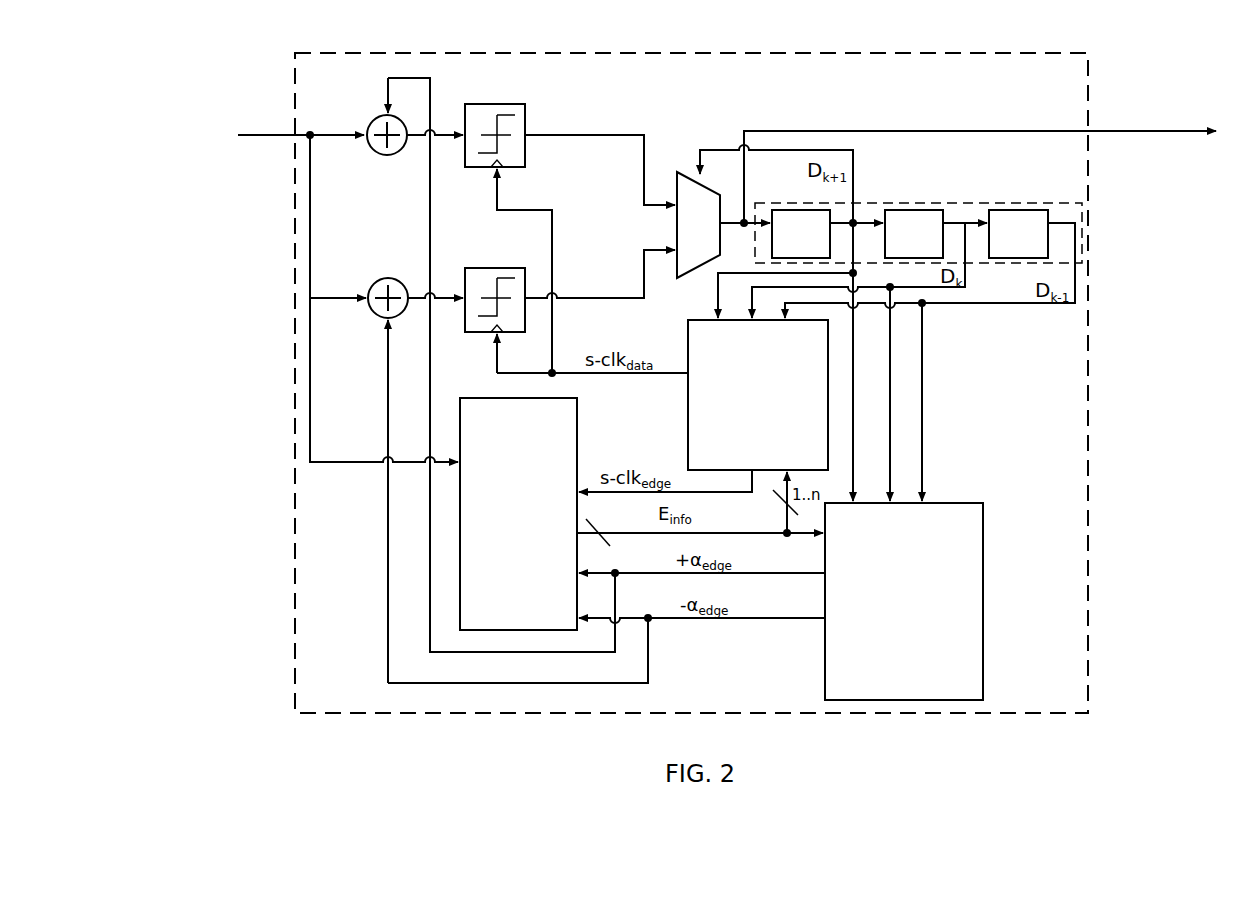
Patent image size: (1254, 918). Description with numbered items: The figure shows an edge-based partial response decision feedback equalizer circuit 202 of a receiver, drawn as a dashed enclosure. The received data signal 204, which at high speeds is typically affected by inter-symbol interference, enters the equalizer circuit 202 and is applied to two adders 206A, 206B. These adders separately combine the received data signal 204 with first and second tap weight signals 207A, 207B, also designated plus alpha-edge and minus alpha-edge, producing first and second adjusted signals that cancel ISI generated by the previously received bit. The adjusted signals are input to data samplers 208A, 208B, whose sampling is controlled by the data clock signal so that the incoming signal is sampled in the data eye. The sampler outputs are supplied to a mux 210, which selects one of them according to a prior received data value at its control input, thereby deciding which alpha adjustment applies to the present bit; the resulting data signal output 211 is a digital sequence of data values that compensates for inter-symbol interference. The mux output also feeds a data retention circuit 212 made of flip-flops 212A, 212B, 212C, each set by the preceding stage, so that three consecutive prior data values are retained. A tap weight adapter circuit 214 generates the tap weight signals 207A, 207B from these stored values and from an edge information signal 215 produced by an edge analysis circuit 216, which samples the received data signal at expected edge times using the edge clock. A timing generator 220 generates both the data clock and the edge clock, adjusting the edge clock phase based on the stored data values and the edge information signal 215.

The equalizer circuit 202 is at (858, 53).
The received data signal 204 is at (272, 137).
The adder 206A is at (371, 120).
The adder 206B is at (390, 278).
The first tap weight signal 207A is at (418, 78).
The second tap weight signal 207B is at (390, 407).
The data sampler 208A is at (516, 104).
The data sampler 208B is at (519, 268).
The mux 210 is at (682, 170).
The data signal output 211 is at (1114, 135).
The data retention circuit 212 is at (918, 215).
The flip-flop 212A is at (801, 234).
The flip-flop 212B is at (914, 234).
The flip-flop 212C is at (1018, 234).
The tap weight adapter circuit 214 is at (904, 601).
The edge information signal 215 is at (755, 540).
The edge analysis circuit 216 is at (518, 514).
The timing generator 220 is at (688, 402).